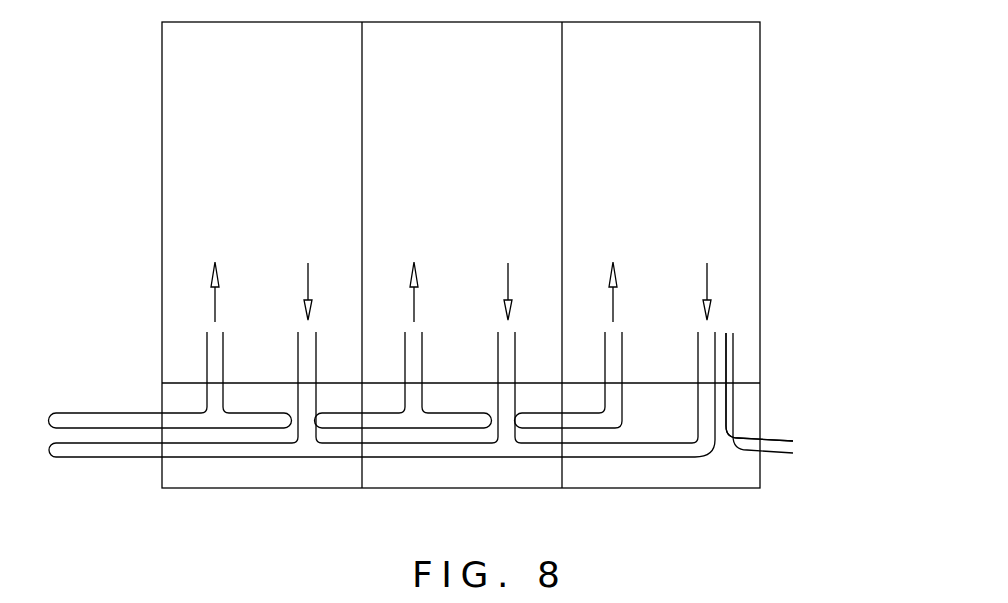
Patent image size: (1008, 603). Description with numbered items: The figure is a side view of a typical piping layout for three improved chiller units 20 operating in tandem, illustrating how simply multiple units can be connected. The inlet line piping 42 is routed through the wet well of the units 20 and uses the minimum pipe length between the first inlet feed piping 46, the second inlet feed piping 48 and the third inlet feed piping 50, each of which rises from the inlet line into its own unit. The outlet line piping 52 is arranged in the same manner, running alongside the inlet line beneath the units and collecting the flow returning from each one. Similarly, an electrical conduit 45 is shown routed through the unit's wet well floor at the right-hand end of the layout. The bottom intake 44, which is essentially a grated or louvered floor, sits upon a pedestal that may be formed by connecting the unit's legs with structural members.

The improved chiller unit 20 is at (162, 125).
The inlet line piping 42 is at (122, 417).
The bottom intake 44 is at (740, 382).
The electrical conduit 45 is at (735, 417).
The first inlet feed piping 46 is at (207, 345).
The second inlet feed piping 48 is at (412, 360).
The third inlet feed piping 50 is at (622, 368).
The outlet line piping 52 is at (117, 453).